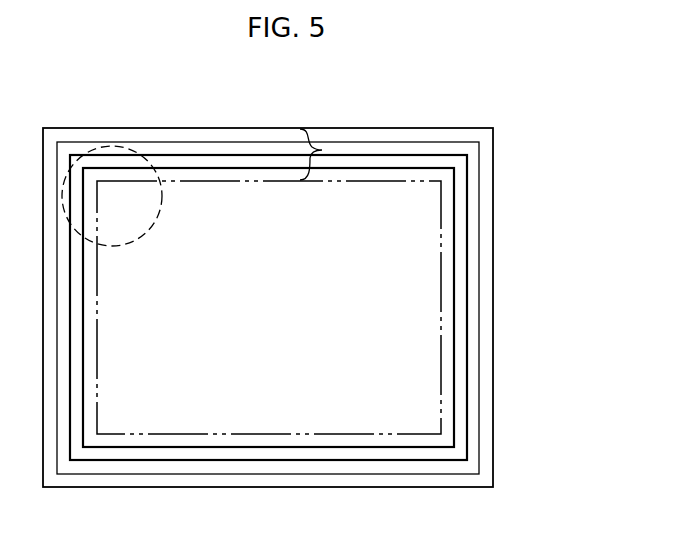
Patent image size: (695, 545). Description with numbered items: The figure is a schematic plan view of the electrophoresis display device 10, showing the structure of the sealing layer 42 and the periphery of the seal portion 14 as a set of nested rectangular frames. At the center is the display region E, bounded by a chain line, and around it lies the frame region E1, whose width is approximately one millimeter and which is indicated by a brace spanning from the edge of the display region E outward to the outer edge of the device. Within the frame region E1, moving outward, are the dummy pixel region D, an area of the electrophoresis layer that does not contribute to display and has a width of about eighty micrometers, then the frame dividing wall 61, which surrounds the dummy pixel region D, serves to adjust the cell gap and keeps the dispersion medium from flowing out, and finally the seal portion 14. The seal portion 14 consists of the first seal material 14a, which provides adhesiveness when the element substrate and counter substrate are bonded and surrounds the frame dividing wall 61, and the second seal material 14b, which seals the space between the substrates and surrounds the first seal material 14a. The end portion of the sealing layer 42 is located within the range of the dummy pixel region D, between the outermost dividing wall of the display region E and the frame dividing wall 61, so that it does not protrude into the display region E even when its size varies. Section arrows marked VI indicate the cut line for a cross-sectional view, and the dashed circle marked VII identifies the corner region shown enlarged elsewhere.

The electrophoresis display device 10 is at (317, 258).
The seal portion 14 is at (317, 307).
The first seal material 14a is at (472, 415).
The second seal material 14b is at (486, 442).
The sealing layer 42 is at (320, 307).
The frame dividing wall 61 is at (457, 272).
The dummy pixel region D is at (448, 245).
The display region E is at (272, 181).
The frame region E1 is at (322, 150).
The section line VI is at (432, 342).
The enlarged region VII is at (133, 142).